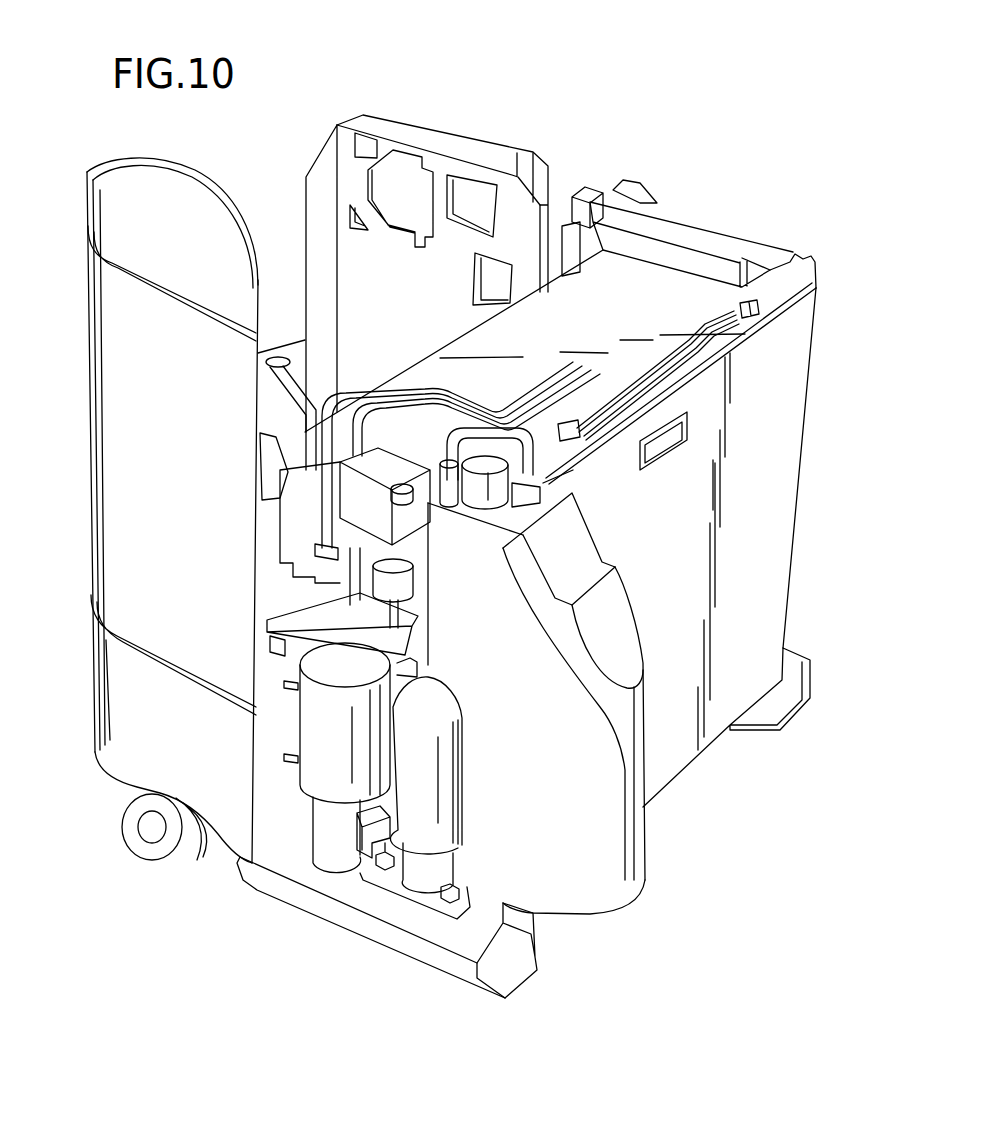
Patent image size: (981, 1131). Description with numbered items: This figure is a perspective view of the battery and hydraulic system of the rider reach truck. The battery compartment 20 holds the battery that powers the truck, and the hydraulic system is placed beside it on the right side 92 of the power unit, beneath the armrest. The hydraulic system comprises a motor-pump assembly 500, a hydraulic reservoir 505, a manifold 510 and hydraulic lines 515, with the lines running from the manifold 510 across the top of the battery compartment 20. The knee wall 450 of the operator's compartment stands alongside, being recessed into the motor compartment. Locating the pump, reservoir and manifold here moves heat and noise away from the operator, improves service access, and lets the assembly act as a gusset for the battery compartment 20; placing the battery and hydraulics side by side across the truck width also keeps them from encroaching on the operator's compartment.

The battery compartment 20 is at (788, 398).
The right side 92 is at (110, 454).
The knee wall 450 is at (500, 147).
The motor-pump assembly 500 is at (327, 770).
The hydraulic reservoir 505 is at (595, 877).
The manifold 510 is at (295, 523).
The hydraulic lines 515 is at (665, 353).